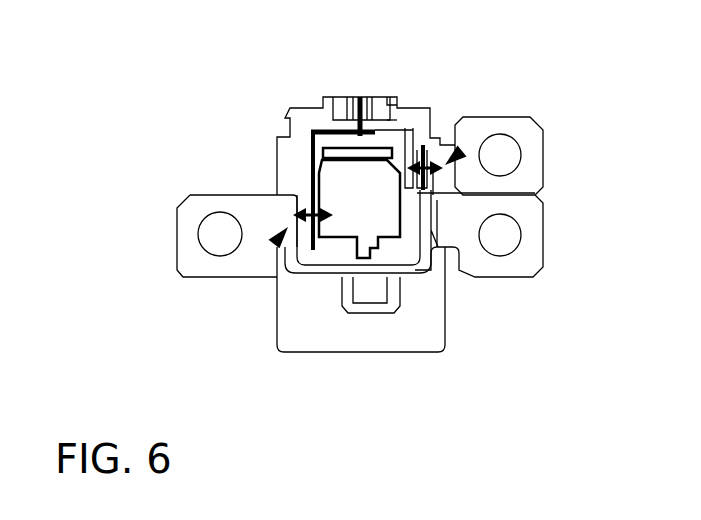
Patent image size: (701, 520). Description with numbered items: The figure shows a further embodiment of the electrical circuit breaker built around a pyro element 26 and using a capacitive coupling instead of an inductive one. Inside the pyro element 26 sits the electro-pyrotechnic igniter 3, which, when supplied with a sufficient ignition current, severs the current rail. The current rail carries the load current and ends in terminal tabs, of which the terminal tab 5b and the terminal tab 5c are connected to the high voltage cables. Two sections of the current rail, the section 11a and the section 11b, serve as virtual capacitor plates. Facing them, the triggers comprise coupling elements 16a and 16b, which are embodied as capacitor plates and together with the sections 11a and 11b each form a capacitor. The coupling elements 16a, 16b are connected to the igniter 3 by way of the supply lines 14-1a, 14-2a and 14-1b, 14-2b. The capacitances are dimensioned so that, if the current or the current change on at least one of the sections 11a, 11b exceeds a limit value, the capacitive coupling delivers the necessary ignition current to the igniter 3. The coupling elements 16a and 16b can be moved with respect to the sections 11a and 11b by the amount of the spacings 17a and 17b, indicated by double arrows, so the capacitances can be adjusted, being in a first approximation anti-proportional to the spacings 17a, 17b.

The electro-pyrotechnic igniter 3 is at (360, 130).
The terminal tab 5b is at (525, 182).
The terminal tab 5c is at (525, 263).
The section of the current rail 11a is at (274, 244).
The section of the current rail 11b is at (462, 151).
The supply line 14-1a is at (313, 163).
The supply line 14-1b is at (393, 130).
The supply line 14-2a is at (393, 255).
The supply line 14-2b is at (335, 143).
The coupling element 16a is at (313, 247).
The coupling element 16b is at (423, 152).
The spacing 17a is at (303, 240).
The spacing 17b is at (433, 183).
The pyro element 26 is at (288, 333).